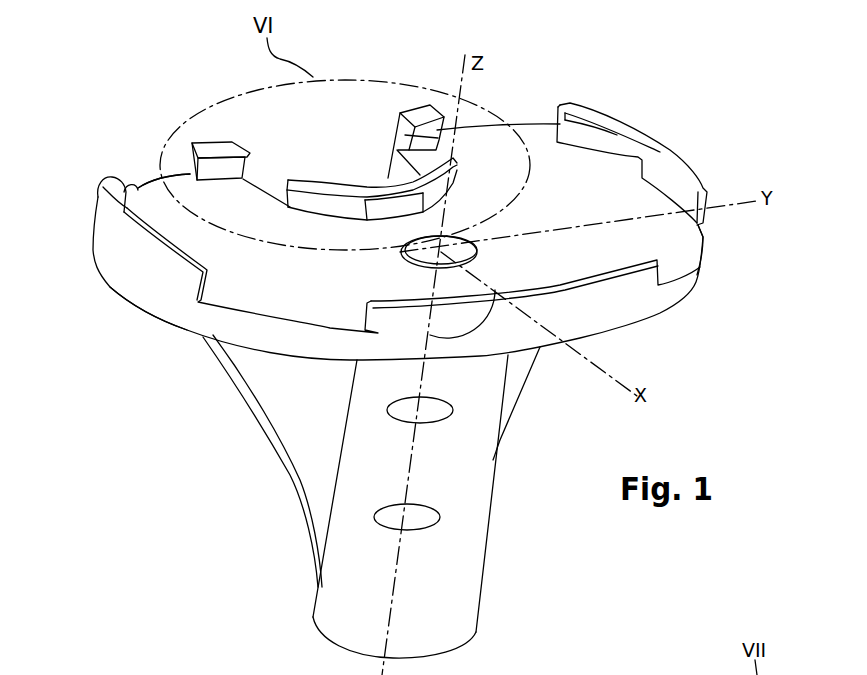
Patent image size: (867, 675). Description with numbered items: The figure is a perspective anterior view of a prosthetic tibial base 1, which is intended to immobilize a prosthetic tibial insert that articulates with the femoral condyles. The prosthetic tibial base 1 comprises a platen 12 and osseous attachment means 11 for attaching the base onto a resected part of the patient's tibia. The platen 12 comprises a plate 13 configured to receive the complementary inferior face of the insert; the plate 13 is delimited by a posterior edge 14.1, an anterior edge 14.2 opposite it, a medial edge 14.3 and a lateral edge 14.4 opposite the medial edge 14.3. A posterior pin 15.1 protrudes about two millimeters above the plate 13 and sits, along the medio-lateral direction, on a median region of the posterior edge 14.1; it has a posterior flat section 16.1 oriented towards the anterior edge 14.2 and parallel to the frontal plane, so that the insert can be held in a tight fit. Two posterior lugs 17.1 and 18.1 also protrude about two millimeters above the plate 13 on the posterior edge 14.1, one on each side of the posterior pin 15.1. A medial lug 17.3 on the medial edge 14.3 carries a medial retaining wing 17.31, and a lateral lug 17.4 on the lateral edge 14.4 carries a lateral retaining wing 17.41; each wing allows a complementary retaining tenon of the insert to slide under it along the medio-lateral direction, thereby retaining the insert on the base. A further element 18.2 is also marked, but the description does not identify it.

The prosthetic tibial base 1 is at (725, 407).
The osseous attachment means 11 is at (357, 475).
The platen 12 is at (690, 277).
The plate 13 is at (483, 160).
The posterior edge 14.1 is at (173, 171).
The anterior edge 14.2 is at (623, 303).
The medial edge 14.3 is at (125, 283).
The lateral edge 14.4 is at (710, 238).
The posterior pin 15.1 is at (322, 185).
The posterior flat section 16.1 is at (383, 204).
The posterior lug 17.1 is at (222, 148).
The medial lug 17.3 is at (113, 200).
The medial retaining wing 17.31 is at (135, 182).
The lateral lug 17.4 is at (668, 157).
The lateral retaining wing 17.41 is at (565, 116).
The posterior lug 18.1 is at (417, 113).
The second positioning block 18.2 is at (600, 674).